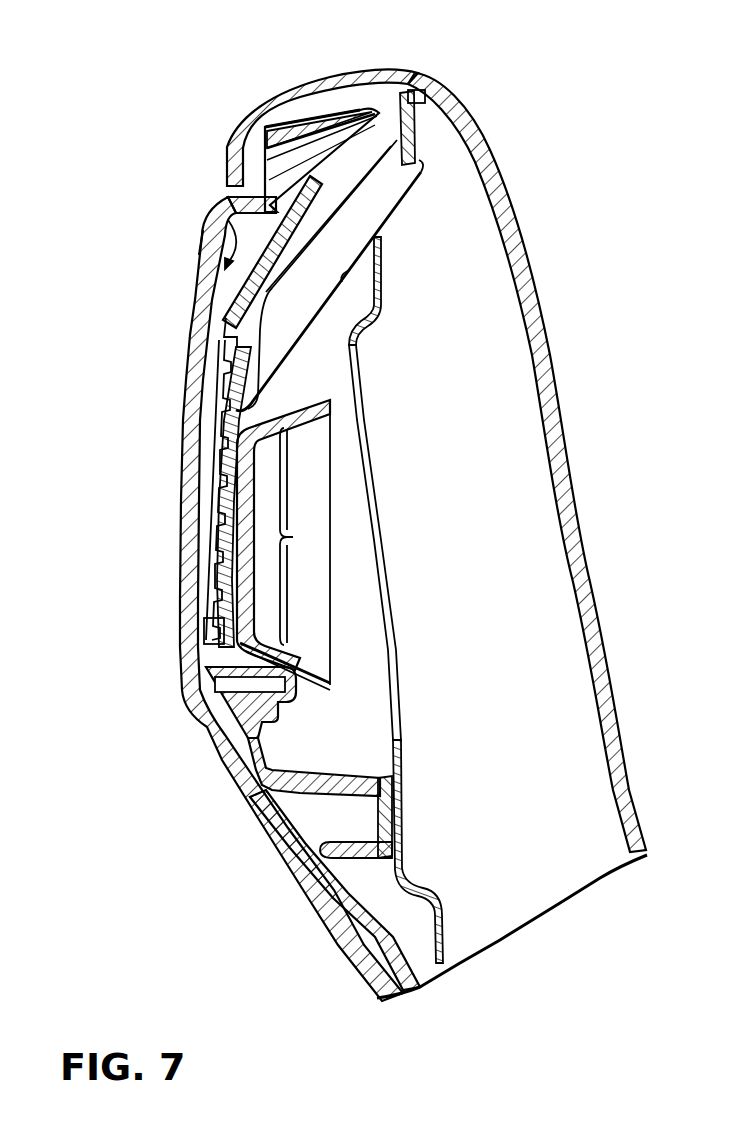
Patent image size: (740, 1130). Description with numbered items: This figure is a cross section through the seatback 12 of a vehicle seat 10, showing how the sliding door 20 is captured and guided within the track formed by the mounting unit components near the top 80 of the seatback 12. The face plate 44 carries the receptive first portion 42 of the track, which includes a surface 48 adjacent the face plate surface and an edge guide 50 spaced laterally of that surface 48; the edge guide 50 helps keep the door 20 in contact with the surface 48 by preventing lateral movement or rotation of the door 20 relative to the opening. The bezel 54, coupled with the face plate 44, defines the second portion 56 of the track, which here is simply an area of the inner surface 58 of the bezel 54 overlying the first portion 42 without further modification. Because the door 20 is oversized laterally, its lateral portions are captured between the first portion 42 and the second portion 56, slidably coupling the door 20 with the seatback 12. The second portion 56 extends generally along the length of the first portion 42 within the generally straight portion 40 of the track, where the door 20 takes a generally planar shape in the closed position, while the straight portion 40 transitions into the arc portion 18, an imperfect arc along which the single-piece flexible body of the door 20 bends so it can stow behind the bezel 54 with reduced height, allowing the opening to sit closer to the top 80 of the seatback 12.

The vehicle seat 10 is at (148, 94).
The seatback 12 is at (556, 233).
The arc portion 18 is at (339, 561).
The door 20 is at (210, 355).
The generally straight portion 40 is at (293, 537).
The first portion 42 is at (213, 457).
The face plate 44 is at (300, 790).
The surface 48 is at (213, 573).
The edge guide 50 is at (257, 293).
The bezel 54 is at (195, 273).
The second portion 56 is at (224, 199).
The inner surface 58 is at (206, 228).
The top 80 is at (312, 84).